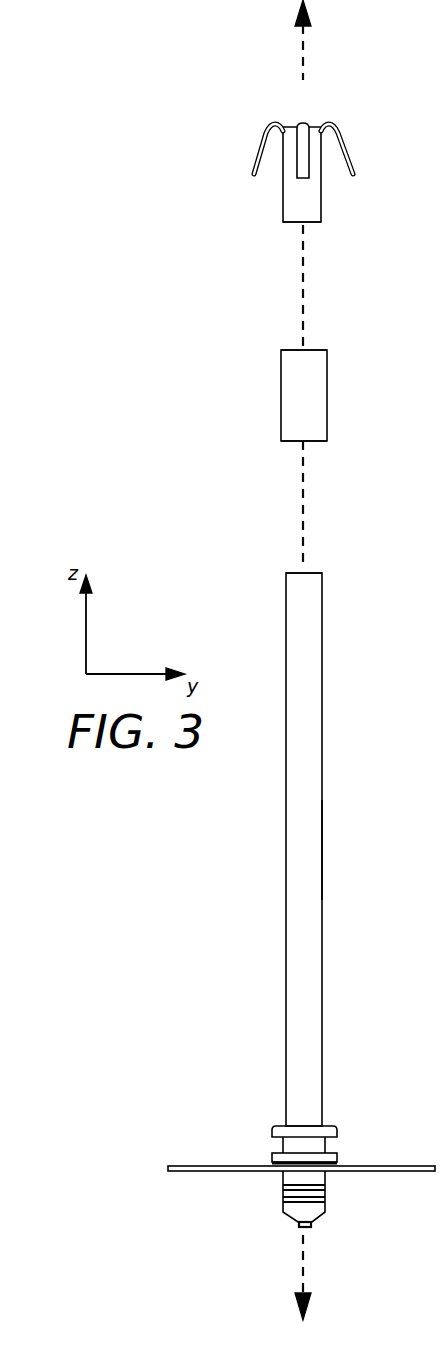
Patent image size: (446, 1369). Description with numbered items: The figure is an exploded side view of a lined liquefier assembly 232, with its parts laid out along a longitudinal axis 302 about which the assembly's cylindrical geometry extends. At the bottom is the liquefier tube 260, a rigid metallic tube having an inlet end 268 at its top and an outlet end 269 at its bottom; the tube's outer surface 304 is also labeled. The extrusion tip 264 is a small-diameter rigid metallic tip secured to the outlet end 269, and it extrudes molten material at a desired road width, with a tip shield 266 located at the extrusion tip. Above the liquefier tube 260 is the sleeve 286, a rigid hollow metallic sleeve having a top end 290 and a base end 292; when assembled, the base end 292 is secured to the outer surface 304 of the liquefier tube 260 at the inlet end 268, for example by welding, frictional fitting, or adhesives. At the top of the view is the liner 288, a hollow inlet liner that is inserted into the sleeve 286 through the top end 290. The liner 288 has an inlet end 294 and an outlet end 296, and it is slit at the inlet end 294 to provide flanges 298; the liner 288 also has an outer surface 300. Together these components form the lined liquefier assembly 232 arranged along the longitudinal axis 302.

The liquefier assembly 232 is at (250, 890).
The liquefier tube 260 is at (297, 829).
The extrusion tip 264 is at (315, 1218).
The tip shield 266 is at (188, 1173).
The inlet end 268 is at (320, 562).
The outlet end 269 is at (255, 1151).
The sleeve 286 is at (284, 394).
The liner 288 is at (267, 173).
The top end 290 is at (285, 341).
The base end 292 is at (327, 449).
The inlet end 294 is at (286, 114).
The outlet end 296 is at (324, 227).
The flanges 298 is at (262, 148).
The outer surface 300 is at (290, 197).
The longitudinal axis 302 is at (301, 63).
The outer surface 304 is at (317, 842).